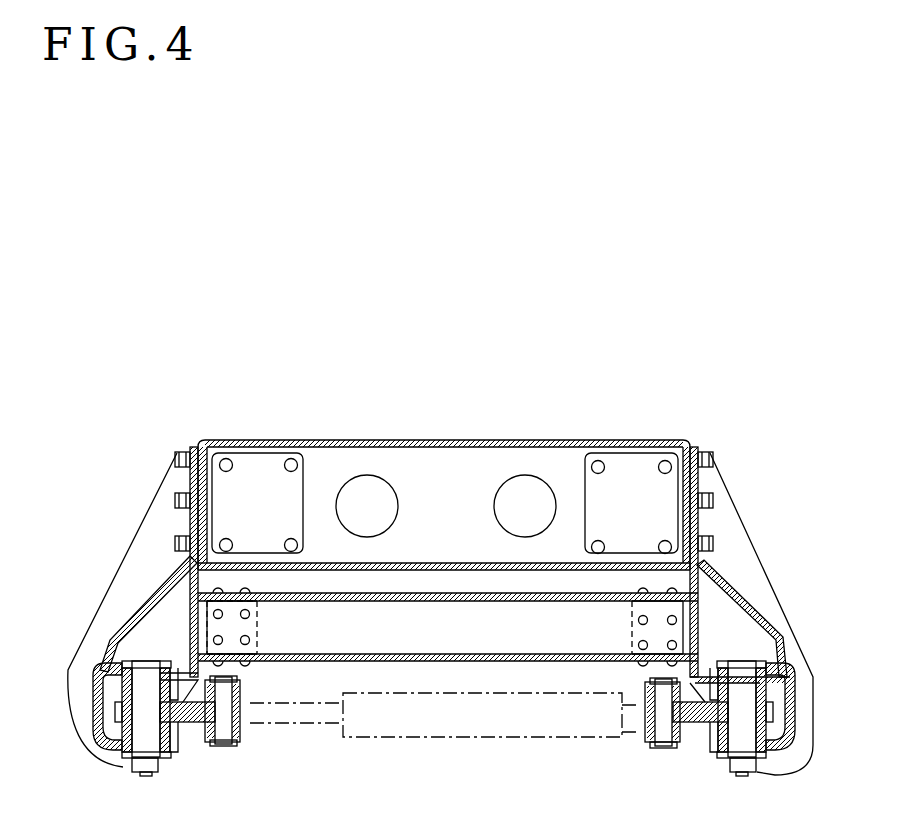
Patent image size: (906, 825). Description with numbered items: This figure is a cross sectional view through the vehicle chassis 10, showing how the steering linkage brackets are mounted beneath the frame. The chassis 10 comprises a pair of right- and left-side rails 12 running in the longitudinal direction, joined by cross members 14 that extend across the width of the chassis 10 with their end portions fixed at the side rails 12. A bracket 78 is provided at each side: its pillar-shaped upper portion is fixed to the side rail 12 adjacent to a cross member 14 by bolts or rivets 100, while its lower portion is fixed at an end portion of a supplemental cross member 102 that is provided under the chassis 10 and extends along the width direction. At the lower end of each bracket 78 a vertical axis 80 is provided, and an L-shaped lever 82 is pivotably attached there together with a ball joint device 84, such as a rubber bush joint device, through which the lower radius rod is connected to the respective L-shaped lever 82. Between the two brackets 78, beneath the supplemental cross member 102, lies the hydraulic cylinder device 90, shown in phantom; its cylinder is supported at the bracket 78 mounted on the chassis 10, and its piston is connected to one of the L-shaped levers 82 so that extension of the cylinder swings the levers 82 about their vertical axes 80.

The chassis 10 is at (470, 416).
The side rail 12 is at (673, 445).
The cross member 14 is at (547, 458).
The bracket 78 is at (128, 540).
The vertical axis 80 is at (141, 735).
The L-shaped lever 82 is at (193, 738).
The ball joint device 84 is at (222, 744).
The hydraulic cylinder device 90 is at (500, 744).
The bolts or rivets 100 is at (178, 458).
The supplemental cross member 102 is at (392, 640).